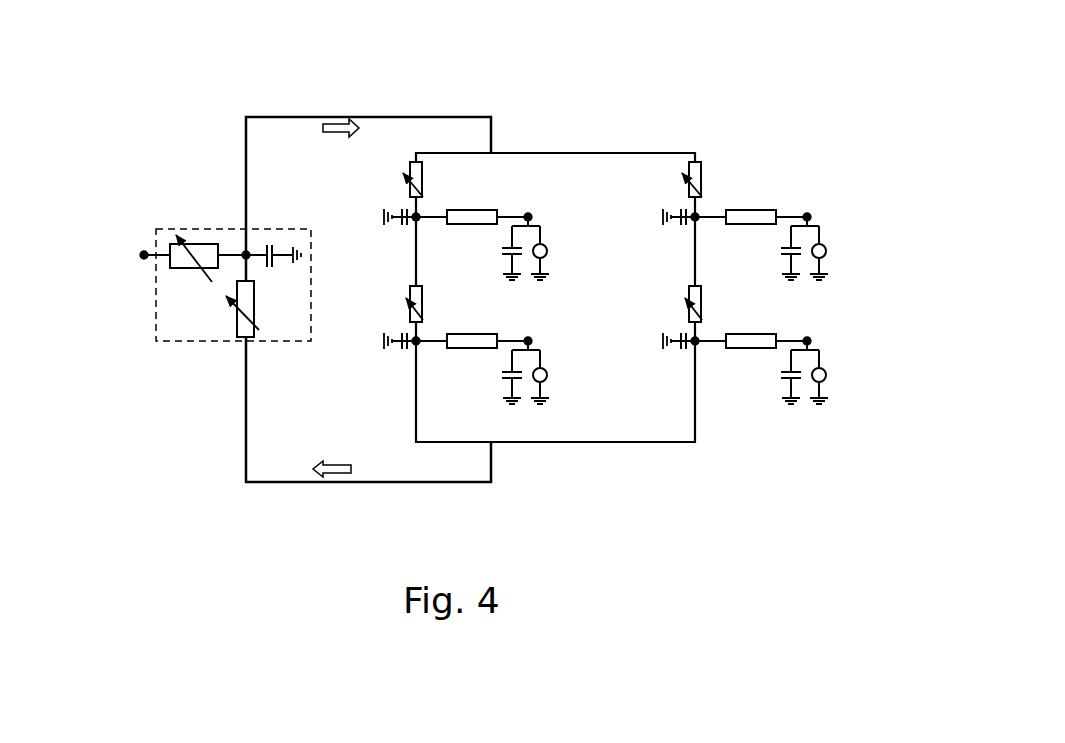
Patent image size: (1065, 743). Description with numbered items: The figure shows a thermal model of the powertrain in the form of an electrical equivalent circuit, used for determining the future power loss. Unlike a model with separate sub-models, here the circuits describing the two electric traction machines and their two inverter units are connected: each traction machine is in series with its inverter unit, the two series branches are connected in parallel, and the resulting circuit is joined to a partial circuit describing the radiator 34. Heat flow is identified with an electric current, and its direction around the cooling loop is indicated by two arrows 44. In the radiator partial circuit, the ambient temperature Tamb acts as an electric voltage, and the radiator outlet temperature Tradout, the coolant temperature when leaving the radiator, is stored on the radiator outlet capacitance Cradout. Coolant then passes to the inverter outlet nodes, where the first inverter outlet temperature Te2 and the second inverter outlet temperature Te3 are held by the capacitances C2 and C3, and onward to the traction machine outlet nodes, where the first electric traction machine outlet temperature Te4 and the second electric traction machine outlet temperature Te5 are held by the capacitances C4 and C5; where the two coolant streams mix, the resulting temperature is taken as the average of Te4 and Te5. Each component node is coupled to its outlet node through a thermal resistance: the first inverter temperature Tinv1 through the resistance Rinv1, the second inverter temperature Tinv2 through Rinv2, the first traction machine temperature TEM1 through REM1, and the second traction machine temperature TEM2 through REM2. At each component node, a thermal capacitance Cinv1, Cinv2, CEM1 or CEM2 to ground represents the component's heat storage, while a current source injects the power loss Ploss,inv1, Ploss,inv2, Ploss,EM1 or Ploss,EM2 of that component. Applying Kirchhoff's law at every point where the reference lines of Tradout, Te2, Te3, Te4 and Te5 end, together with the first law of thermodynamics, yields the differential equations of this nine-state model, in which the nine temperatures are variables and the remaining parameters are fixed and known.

The arrows 44 is at (342, 122).
The radiator 34 is at (156, 302).
The ambient temperature Tamb is at (141, 255).
The radiator outlet temperature Tradout is at (246, 251).
The radiator outlet thermal capacitance Cradout is at (271, 281).
The first inverter outlet thermal capacitance C2 is at (399, 199).
The second inverter outlet thermal capacitance C3 is at (682, 205).
The first electric traction machine outlet thermal capacitance C4 is at (402, 361).
The second electric traction machine outlet thermal capacitance C5 is at (679, 354).
The first inverter outlet temperature Te2 is at (418, 215).
The second inverter outlet temperature Te3 is at (697, 215).
The first electric traction machine outlet temperature Te4 is at (418, 340).
The second electric traction machine outlet temperature Te5 is at (693, 340).
The thermal resistance of the first inverter unit Rinv1 is at (483, 211).
The thermal resistance of the second inverter unit Rinv2 is at (758, 211).
The thermal resistance of the first electric traction machine REM1 is at (483, 342).
The thermal resistance of the second electric traction machine REM2 is at (752, 333).
The first inverter temperature Tinv1 is at (530, 215).
The second inverter temperature Tinv2 is at (809, 215).
The first electric traction machine temperature TEM1 is at (531, 341).
The second electric traction machine temperature TEM2 is at (810, 341).
The thermal capacitance of the first inverter unit Cinv1 is at (499, 248).
The thermal capacitance of the second inverter unit Cinv2 is at (778, 252).
The thermal capacitance of the first electric traction machine CEM1 is at (497, 373).
The thermal capacitance of the second electric traction machine CEM2 is at (777, 377).
The power loss of the first inverter unit Ploss,inv1 is at (548, 249).
The power loss of the second inverter unit Ploss,inv2 is at (827, 251).
The power loss of the first electric traction machine Ploss,EM1 is at (548, 376).
The power loss of the second electric traction machine Ploss,EM2 is at (827, 375).